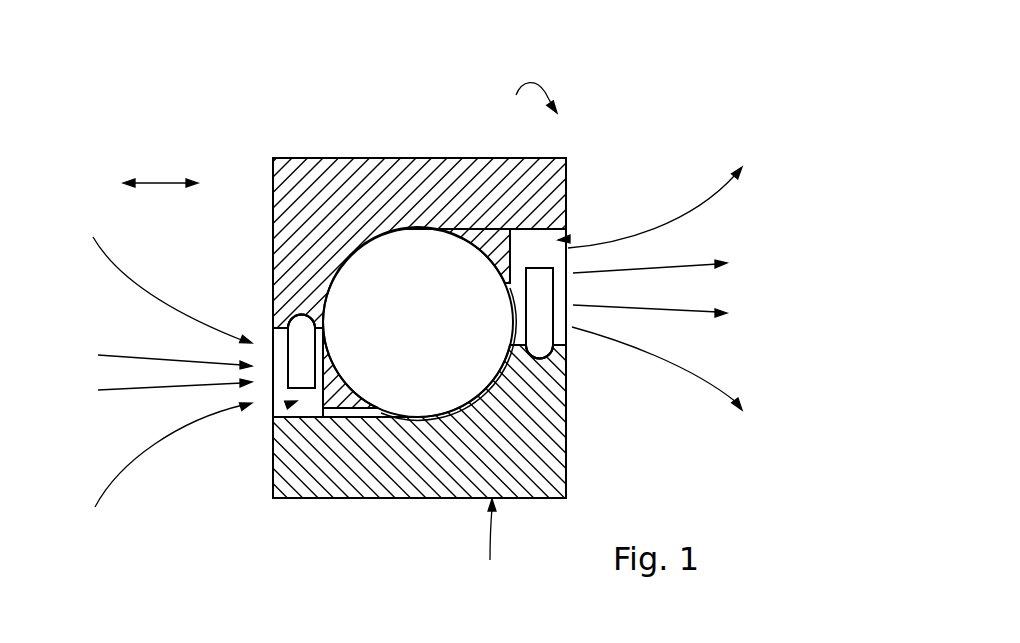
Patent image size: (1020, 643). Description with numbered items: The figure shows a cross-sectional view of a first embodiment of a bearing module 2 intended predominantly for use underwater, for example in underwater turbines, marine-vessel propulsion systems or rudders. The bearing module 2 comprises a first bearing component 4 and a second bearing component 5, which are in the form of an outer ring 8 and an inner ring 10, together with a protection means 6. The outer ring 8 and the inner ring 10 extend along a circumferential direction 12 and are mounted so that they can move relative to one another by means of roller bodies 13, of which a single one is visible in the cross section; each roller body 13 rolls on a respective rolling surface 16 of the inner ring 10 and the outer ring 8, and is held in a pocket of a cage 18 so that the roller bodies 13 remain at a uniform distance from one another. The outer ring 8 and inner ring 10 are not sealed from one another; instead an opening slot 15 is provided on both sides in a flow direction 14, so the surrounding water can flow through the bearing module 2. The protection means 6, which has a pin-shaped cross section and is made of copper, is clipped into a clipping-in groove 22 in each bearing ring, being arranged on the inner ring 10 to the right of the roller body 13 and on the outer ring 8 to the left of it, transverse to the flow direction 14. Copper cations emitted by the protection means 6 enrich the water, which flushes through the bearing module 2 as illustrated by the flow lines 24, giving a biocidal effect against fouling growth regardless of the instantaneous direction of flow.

The bearing module 2 is at (590, 485).
The first bearing component 4 is at (444, 152).
The second bearing component 5 is at (489, 544).
The protection means 6 is at (541, 267).
The outer ring 8 is at (322, 167).
The inner ring 10 is at (428, 470).
The circumferential direction 12 is at (502, 147).
The roller bodies 13 is at (406, 332).
The flow direction 14 is at (157, 182).
The opening slot 15 is at (288, 405).
The rolling surface 16 is at (403, 228).
The cage 18 is at (499, 230).
The clipping-in groove 22 is at (300, 316).
The flow lines 24 is at (113, 357).